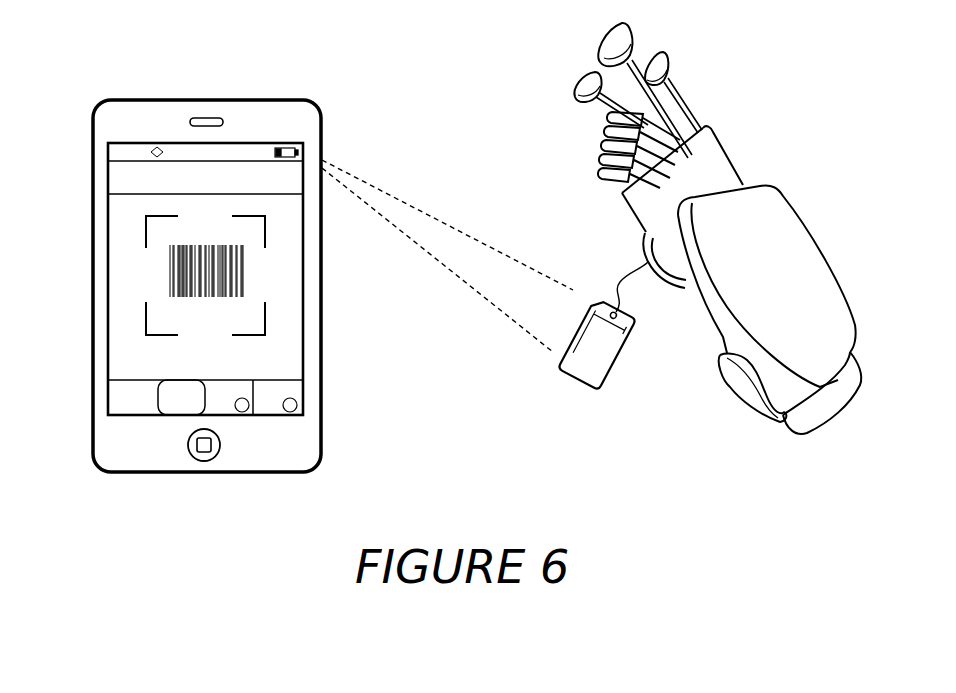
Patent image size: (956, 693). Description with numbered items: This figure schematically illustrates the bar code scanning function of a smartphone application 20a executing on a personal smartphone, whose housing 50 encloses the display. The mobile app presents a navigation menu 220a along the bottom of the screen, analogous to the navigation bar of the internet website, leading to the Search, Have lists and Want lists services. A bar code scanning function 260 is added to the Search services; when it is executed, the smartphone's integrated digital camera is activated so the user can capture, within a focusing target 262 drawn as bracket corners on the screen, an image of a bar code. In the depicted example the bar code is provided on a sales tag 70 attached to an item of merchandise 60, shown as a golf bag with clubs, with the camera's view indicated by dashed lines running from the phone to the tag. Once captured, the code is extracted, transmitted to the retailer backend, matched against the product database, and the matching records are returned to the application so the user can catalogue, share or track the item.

The smartphone application 20a is at (352, 378).
The smartphone housing 50 is at (208, 98).
The bar code scanning function 260 is at (86, 162).
The focusing target 262 is at (266, 233).
The navigation menu 220a is at (86, 382).
The merchandise 60 is at (812, 177).
The sales tag 70 is at (620, 385).